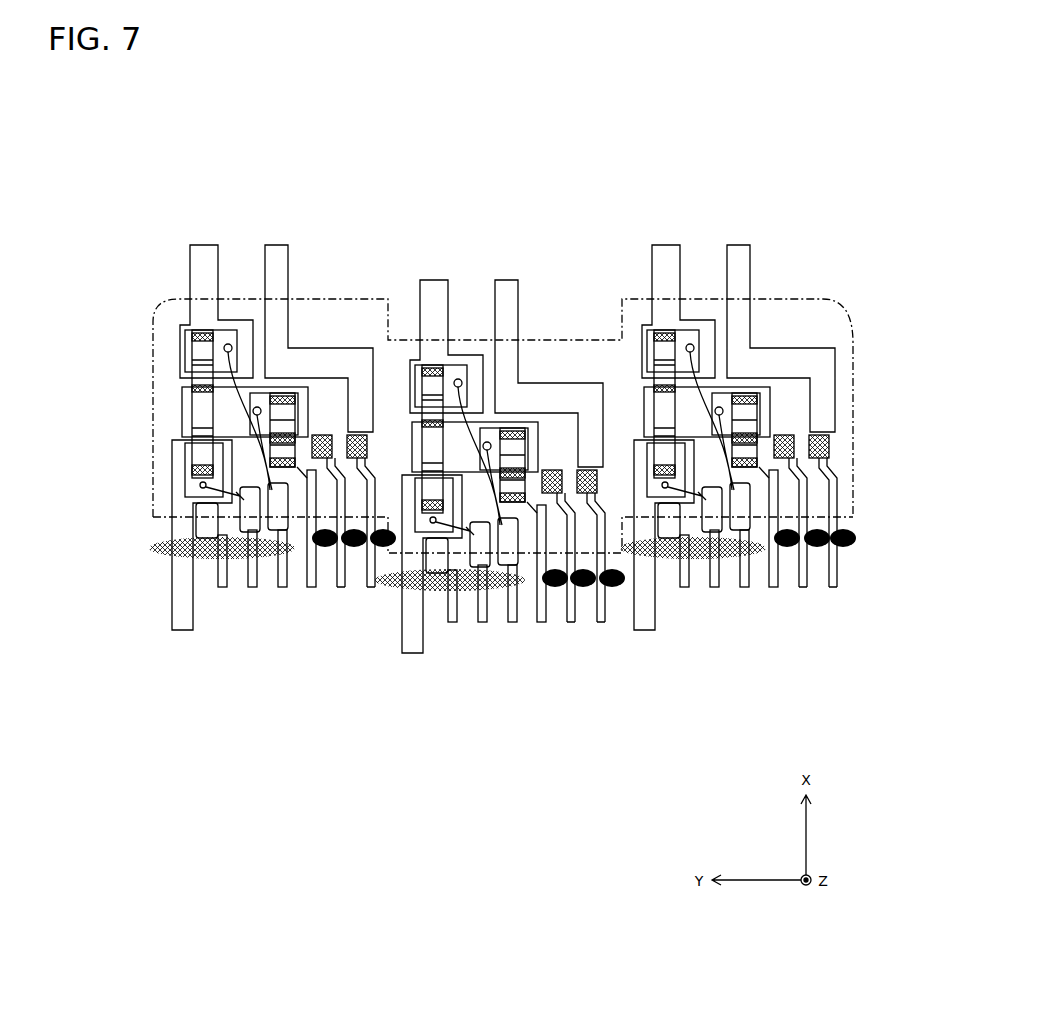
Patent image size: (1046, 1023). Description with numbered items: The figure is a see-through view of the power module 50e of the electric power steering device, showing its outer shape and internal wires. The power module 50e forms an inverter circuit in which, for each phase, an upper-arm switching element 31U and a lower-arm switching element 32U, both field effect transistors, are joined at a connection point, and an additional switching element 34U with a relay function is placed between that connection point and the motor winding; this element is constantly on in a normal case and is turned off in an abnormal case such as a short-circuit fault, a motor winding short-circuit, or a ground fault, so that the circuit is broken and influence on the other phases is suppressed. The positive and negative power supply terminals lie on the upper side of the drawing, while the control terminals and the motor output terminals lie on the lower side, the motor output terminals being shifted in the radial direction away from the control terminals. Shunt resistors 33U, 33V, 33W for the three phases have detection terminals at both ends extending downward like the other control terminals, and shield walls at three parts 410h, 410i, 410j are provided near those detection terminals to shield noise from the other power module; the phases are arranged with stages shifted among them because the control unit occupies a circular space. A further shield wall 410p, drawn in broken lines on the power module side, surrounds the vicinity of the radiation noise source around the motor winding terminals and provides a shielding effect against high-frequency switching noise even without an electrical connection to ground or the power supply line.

The power module 50e is at (780, 297).
The switching element 31U is at (187, 323).
The switching element 32U is at (183, 403).
The switching element 34U is at (183, 467).
The shunt resistor 33U is at (360, 433).
The shunt resistor 33V is at (590, 468).
The shunt resistor 33W is at (835, 435).
The shield wall 410p is at (152, 563).
The shield wall 410j is at (322, 560).
The shield wall 410i is at (563, 595).
The shield wall 410h is at (790, 563).